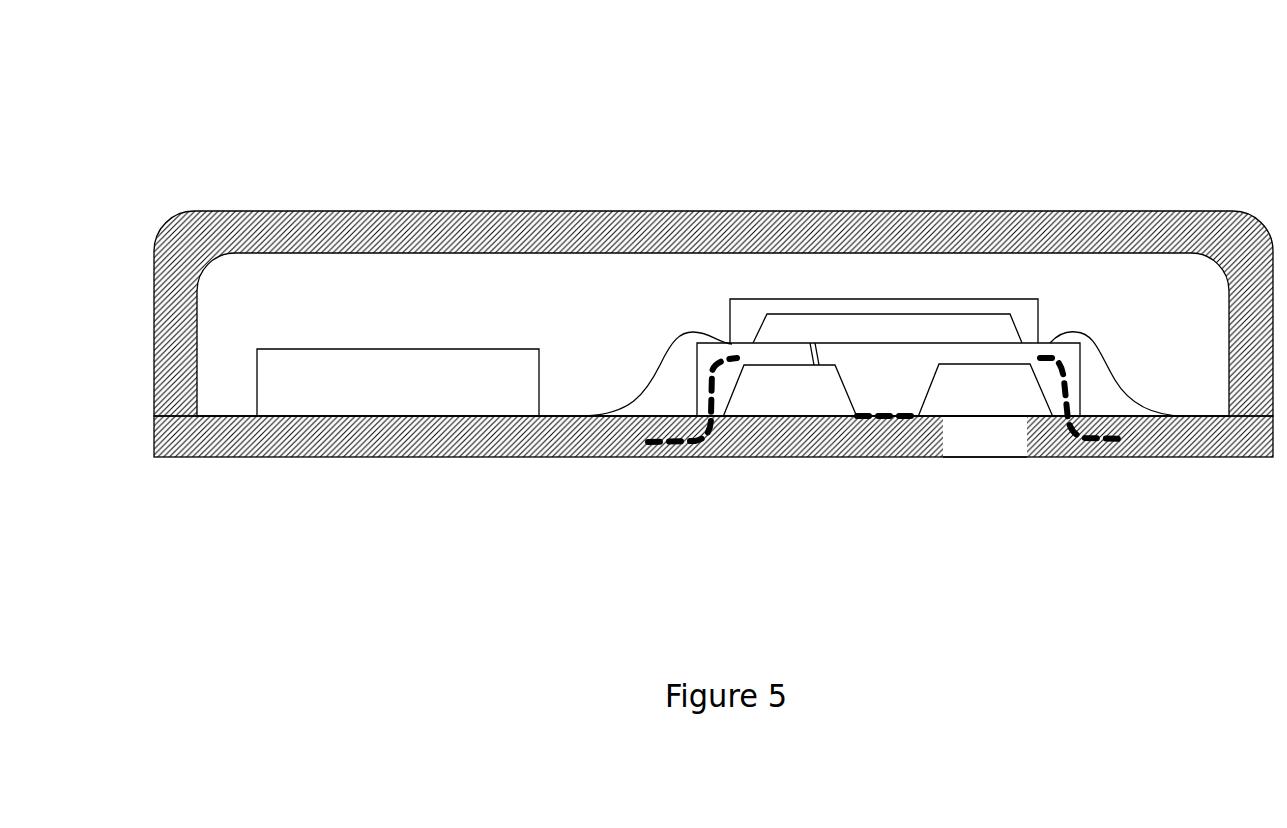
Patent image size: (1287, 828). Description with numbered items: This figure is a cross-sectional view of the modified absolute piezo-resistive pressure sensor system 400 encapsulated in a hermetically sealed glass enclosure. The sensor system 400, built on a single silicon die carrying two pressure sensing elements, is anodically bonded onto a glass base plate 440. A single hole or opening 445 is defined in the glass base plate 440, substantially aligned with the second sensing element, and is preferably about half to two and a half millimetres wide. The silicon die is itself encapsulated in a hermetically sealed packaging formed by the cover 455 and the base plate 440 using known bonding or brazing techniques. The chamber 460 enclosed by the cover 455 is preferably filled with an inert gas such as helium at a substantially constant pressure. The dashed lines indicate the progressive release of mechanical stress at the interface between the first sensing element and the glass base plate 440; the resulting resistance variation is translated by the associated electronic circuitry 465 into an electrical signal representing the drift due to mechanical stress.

The cover 455 is at (322, 210).
The chamber 460 is at (397, 305).
The absolute piezo-resistive pressure sensor system 400 is at (844, 295).
The glass base plate 440 is at (388, 432).
The electronic circuitry 465 is at (503, 382).
The hole or opening 445 is at (980, 437).